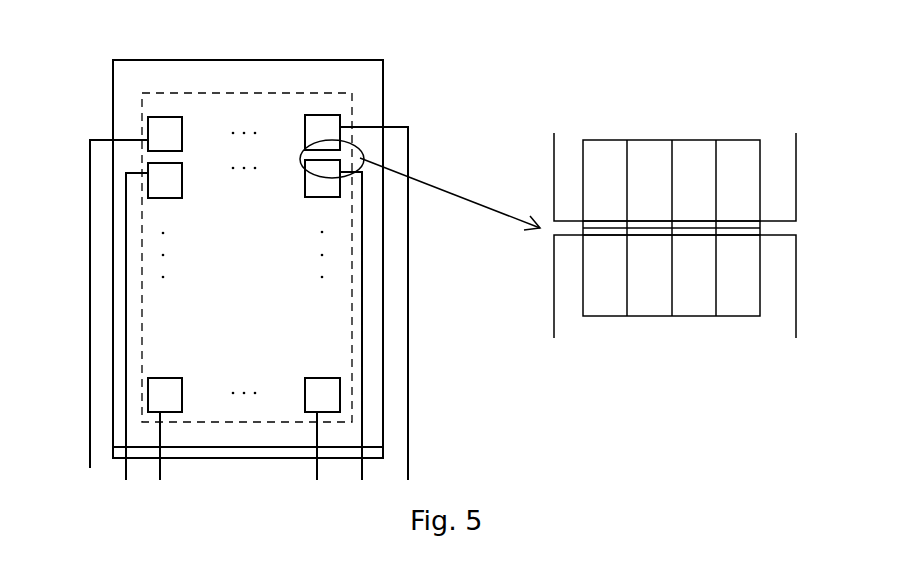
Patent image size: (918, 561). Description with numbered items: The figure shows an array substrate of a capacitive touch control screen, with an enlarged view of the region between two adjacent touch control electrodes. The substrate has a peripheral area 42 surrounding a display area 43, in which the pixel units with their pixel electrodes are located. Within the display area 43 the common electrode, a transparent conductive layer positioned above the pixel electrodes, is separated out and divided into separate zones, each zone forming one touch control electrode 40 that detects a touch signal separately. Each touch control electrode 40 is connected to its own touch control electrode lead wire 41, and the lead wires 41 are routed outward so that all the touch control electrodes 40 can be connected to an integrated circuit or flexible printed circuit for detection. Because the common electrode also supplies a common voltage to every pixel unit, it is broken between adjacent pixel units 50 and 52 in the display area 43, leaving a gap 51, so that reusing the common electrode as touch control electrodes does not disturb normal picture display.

The touch control electrode 40 is at (313, 130).
The touch control electrode lead wire 41 is at (408, 127).
The peripheral area 42 is at (127, 83).
The display area 43 is at (220, 108).
The pixel unit 50 is at (737, 178).
The gap 51 is at (797, 228).
The pixel unit 52 is at (748, 278).